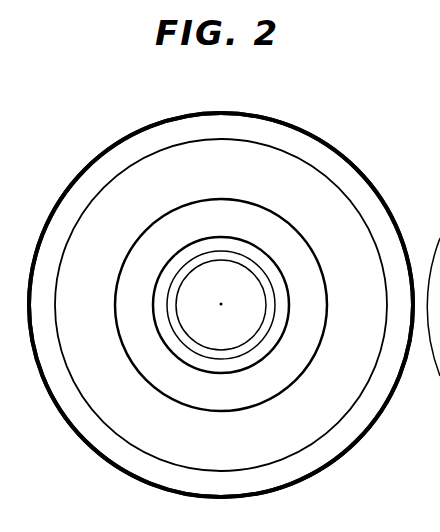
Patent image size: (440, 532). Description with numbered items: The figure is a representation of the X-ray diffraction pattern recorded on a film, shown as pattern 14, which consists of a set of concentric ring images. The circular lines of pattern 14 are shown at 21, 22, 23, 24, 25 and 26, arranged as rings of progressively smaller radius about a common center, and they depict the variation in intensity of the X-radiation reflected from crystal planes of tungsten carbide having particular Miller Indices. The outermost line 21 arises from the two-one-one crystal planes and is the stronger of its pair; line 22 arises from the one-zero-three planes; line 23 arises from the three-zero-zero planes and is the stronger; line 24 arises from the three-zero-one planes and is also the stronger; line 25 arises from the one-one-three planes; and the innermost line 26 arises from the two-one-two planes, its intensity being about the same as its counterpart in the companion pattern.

The pattern 14 is at (202, 112).
The circular line 21 is at (330, 140).
The circular line 22 is at (353, 198).
The circular line 23 is at (328, 288).
The circular line 24 is at (236, 305).
The circular line 25 is at (200, 357).
The circular line 26 is at (185, 335).